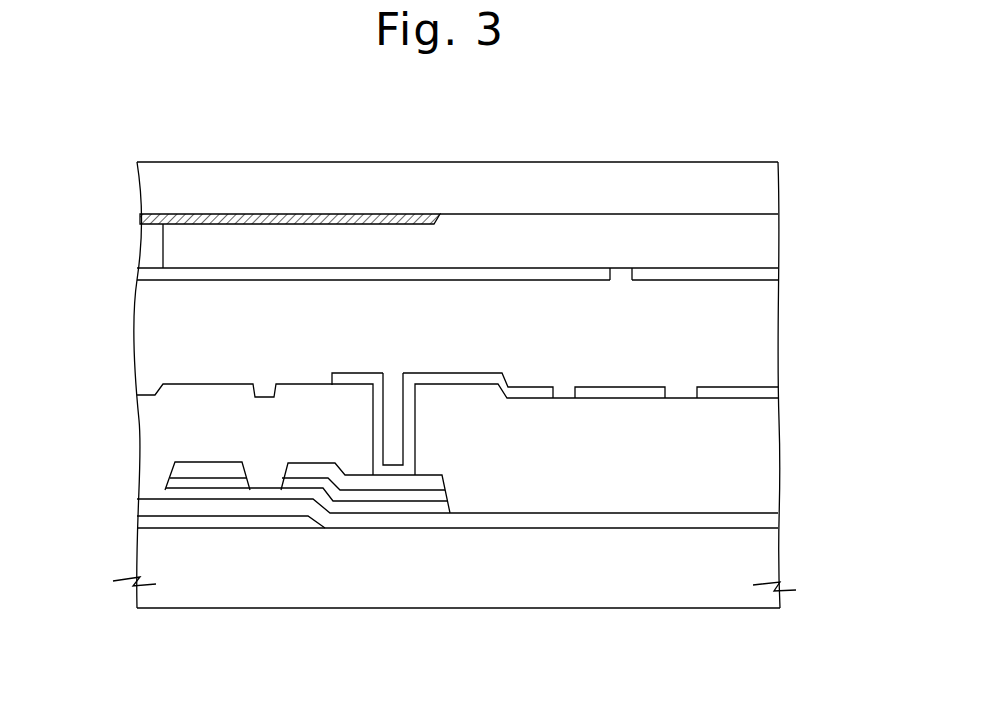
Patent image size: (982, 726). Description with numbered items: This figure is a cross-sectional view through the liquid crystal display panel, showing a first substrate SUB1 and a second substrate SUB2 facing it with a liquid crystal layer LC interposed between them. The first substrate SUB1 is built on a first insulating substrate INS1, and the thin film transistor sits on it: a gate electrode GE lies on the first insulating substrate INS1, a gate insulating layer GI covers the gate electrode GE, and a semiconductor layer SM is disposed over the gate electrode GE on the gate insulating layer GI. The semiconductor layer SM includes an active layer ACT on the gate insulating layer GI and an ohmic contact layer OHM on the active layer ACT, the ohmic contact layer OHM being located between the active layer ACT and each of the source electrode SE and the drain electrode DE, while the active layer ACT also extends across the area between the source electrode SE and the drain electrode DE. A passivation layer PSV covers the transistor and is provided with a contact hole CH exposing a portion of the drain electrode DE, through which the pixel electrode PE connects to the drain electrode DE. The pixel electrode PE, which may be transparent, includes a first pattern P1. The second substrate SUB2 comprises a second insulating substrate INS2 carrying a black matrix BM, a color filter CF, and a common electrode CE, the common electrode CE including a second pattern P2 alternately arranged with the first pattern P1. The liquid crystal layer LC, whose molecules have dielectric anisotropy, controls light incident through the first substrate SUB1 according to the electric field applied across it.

The black matrix BM is at (383, 207).
The second insulating substrate INS2 is at (766, 192).
The color filter CF is at (766, 244).
The common electrode CE is at (486, 307).
The liquid crystal layer LC is at (766, 336).
The pixel electrode PE is at (583, 390).
The passivation layer PSV is at (766, 462).
The gate insulating layer GI is at (766, 526).
The first insulating substrate INS1 is at (766, 560).
The first substrate SUB1 is at (448, 513).
The second substrate SUB2 is at (448, 231).
The contact hole CH is at (393, 380).
The first pattern P1 is at (563, 390).
The second pattern P2 is at (621, 283).
The source electrode SE is at (185, 470).
The active layer ACT is at (215, 493).
The ohmic contact layer OHM is at (237, 483).
The gate electrode GE is at (272, 520).
The drain electrode DE is at (412, 485).
The semiconductor layer SM is at (306, 595).